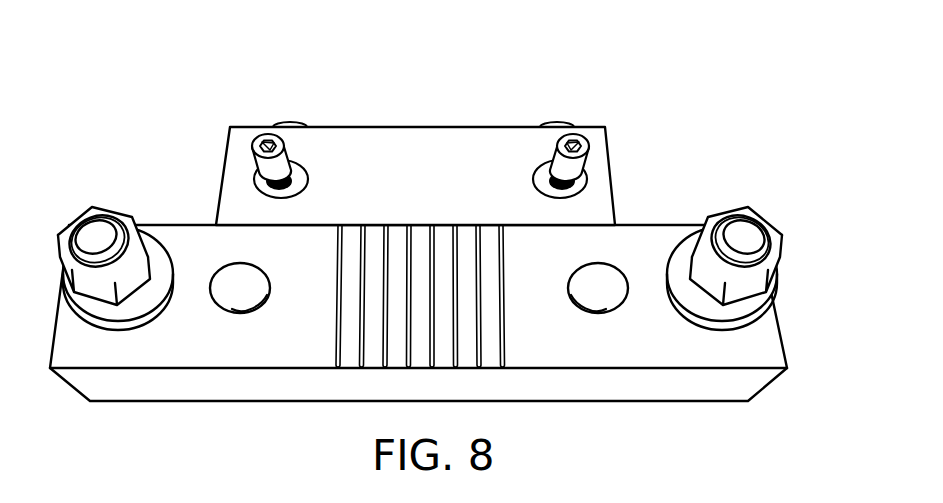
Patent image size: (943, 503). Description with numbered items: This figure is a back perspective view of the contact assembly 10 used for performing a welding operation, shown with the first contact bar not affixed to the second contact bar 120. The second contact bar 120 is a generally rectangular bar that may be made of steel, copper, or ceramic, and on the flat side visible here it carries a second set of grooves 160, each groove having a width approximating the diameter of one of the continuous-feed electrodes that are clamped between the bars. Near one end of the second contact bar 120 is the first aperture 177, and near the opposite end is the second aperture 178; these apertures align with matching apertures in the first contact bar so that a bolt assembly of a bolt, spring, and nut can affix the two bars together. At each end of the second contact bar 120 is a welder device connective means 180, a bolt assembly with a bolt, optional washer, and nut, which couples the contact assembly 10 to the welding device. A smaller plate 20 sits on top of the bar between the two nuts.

The contact assembly 10 is at (630, 93).
The upper terminal plate 20 is at (600, 148).
The second contact bar 120 is at (183, 355).
The second set of grooves 160 is at (390, 368).
The first aperture 177 is at (240, 306).
The second aperture 178 is at (593, 308).
The welder device connective means 180 is at (122, 203).